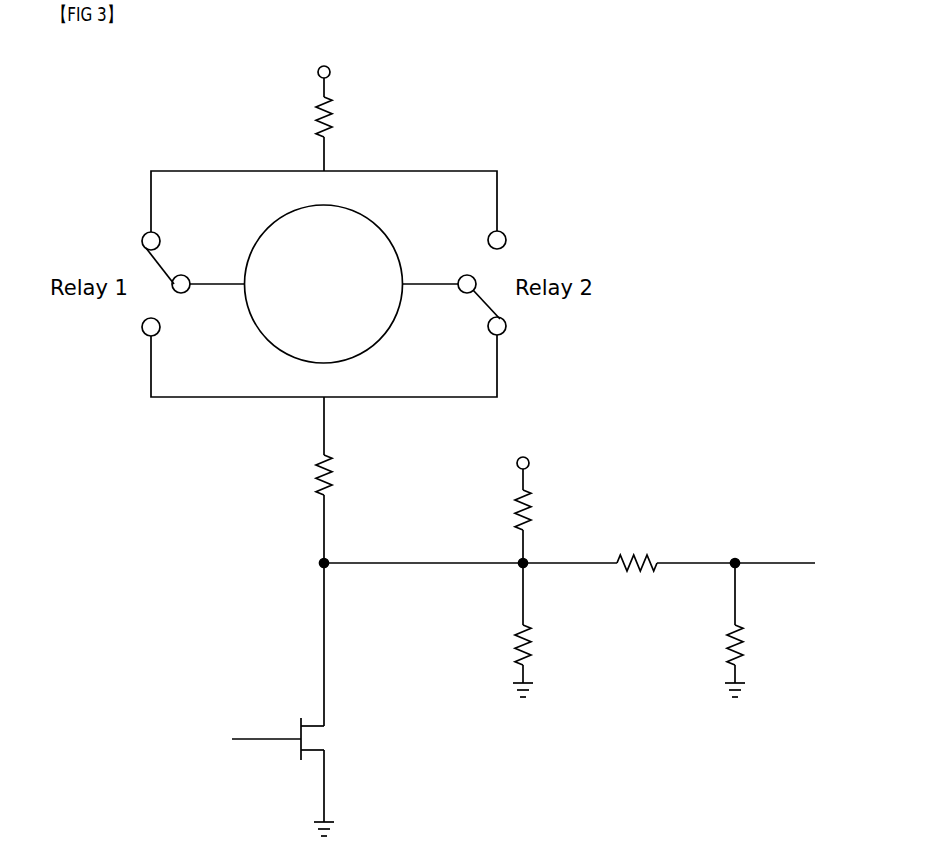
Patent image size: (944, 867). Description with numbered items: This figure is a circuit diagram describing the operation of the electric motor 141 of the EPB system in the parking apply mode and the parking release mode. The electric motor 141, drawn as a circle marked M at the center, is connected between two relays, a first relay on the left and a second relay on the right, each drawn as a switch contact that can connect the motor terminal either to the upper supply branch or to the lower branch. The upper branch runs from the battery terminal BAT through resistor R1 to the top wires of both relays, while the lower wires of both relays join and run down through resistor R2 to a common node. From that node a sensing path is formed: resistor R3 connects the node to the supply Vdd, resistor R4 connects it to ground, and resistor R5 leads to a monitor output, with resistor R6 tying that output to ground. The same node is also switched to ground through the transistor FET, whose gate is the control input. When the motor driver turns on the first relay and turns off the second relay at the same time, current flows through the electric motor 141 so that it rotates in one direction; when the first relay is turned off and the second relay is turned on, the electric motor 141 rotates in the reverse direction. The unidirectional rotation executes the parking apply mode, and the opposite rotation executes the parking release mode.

The electric motor 141 is at (277, 225).
The resistor R1 is at (339, 117).
The resistor R2 is at (342, 475).
The resistor R3 is at (540, 510).
The resistor R4 is at (540, 645).
The resistor R5 is at (637, 576).
The resistor R6 is at (752, 645).
The battery terminal BAT is at (323, 66).
The supply voltage terminal Vdd is at (522, 457).
The field effect transistor FET is at (278, 736).